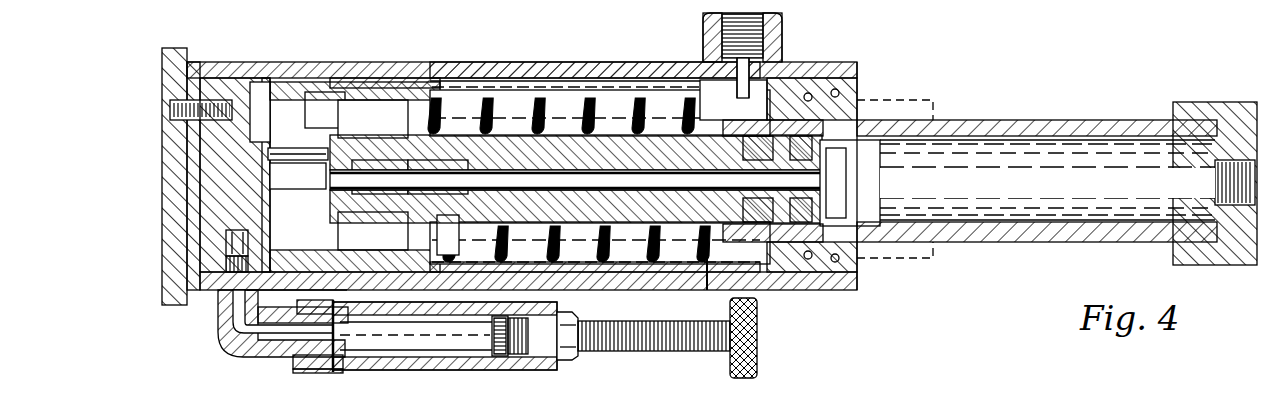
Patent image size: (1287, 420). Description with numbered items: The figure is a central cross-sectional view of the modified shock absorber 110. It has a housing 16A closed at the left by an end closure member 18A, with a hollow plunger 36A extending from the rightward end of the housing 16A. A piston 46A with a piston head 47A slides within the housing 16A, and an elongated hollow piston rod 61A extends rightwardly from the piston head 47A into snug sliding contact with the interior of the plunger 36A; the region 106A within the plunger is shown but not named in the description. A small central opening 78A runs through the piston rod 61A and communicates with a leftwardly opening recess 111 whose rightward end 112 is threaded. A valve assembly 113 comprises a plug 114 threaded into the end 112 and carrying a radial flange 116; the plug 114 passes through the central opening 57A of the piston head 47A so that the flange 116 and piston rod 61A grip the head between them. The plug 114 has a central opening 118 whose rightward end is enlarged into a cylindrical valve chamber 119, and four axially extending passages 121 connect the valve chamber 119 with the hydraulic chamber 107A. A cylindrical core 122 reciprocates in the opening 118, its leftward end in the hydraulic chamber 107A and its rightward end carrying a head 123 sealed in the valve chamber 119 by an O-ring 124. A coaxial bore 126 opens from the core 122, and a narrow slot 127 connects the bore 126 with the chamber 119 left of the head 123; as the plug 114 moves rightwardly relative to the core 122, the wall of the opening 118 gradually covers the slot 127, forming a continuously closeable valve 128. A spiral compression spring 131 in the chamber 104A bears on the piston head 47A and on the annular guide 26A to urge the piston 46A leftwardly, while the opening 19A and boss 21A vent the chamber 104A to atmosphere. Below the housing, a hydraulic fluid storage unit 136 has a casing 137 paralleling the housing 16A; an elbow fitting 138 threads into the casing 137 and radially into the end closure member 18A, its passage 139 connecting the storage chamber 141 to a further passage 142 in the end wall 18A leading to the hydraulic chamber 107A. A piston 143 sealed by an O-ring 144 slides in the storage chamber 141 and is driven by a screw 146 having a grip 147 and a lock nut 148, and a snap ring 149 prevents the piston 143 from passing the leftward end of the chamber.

The housing 16A is at (327, 58).
The end closure member 18A is at (192, 202).
The opening 19A is at (742, 104).
The boss 21A is at (784, 22).
The annular guide 26A is at (800, 70).
The hollow plunger 36A is at (1120, 116).
The piston 46A is at (470, 72).
The piston head 47A is at (368, 78).
The central opening 57A is at (325, 110).
The hollow piston rod 61A is at (628, 212).
The central opening 78A is at (818, 170).
The chamber 104A is at (590, 78).
The bore 106A is at (990, 216).
The hydraulic chamber 107A is at (262, 118).
The shock absorber 110 is at (470, 36).
The recess 111 is at (355, 110).
The rightward end 112 is at (498, 148).
The valve assembly 113 is at (504, 266).
The plug 114 is at (576, 206).
The radial flange 116 is at (262, 128).
The central opening 118 is at (298, 176).
The valve chamber 119 is at (480, 196).
The axially extending passages 121 is at (267, 158).
The cylindrical core 122 is at (268, 192).
The head 123 is at (458, 238).
The O-ring 124 is at (482, 92).
The coaxial bore 126 is at (438, 177).
The slot 127 is at (380, 177).
The continuously closeable valve 128 is at (355, 242).
The spiral compression spring 131 is at (708, 290).
The hydraulic fluid storage unit 136 is at (443, 380).
The casing 137 is at (346, 366).
The elbow fitting 138 is at (272, 358).
The passage 139 is at (236, 345).
The storage chamber 141 is at (334, 380).
The passage 142 is at (222, 250).
The piston 143 is at (490, 336).
The O-ring 144 is at (510, 358).
The screw 146 is at (642, 352).
The manually engageable grip 147 is at (744, 378).
The lock nut 148 is at (568, 362).
The snap ring 149 is at (318, 372).